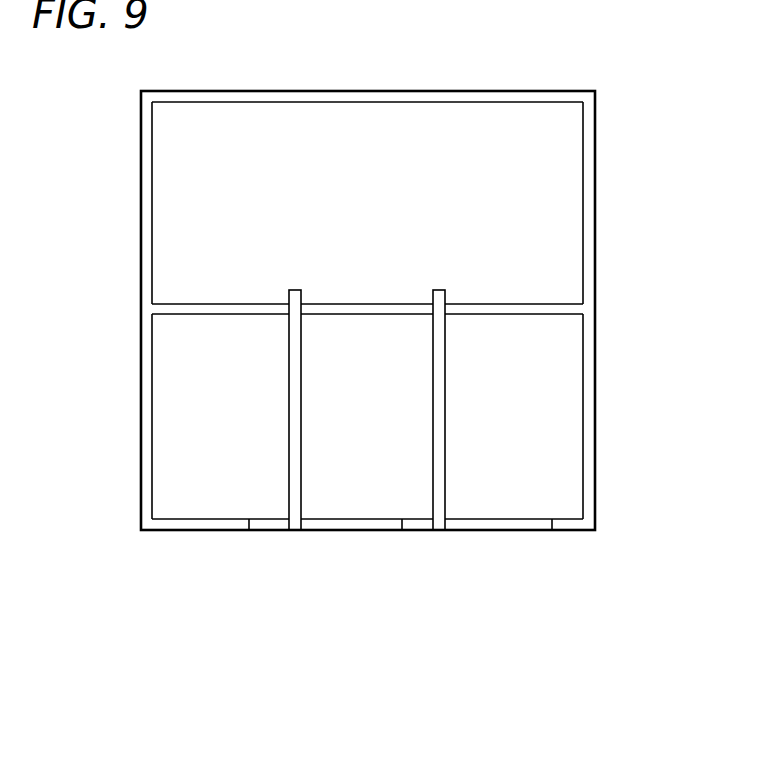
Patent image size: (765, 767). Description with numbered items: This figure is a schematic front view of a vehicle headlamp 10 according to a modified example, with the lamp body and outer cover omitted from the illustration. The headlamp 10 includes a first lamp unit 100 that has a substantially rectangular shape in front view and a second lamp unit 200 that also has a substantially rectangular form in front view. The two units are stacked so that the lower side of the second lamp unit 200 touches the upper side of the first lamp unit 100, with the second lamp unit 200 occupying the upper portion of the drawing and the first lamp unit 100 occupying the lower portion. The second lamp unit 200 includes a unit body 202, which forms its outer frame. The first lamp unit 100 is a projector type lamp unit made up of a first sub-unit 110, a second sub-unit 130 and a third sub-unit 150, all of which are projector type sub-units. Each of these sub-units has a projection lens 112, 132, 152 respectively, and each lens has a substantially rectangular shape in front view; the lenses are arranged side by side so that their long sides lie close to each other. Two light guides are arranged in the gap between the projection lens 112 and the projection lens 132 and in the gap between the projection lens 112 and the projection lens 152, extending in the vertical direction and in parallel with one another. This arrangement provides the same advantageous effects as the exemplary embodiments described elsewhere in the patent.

The headlamp 10 is at (382, 688).
The first lamp unit 100 is at (423, 448).
The first sub-unit 110 is at (367, 522).
The projection lens 112 is at (403, 530).
The second sub-unit 130 is at (518, 522).
The projection lens 132 is at (553, 530).
The third sub-unit 150 is at (216, 522).
The projection lens 152 is at (250, 530).
The second lamp unit 200 is at (423, 170).
The unit body 202 is at (543, 100).